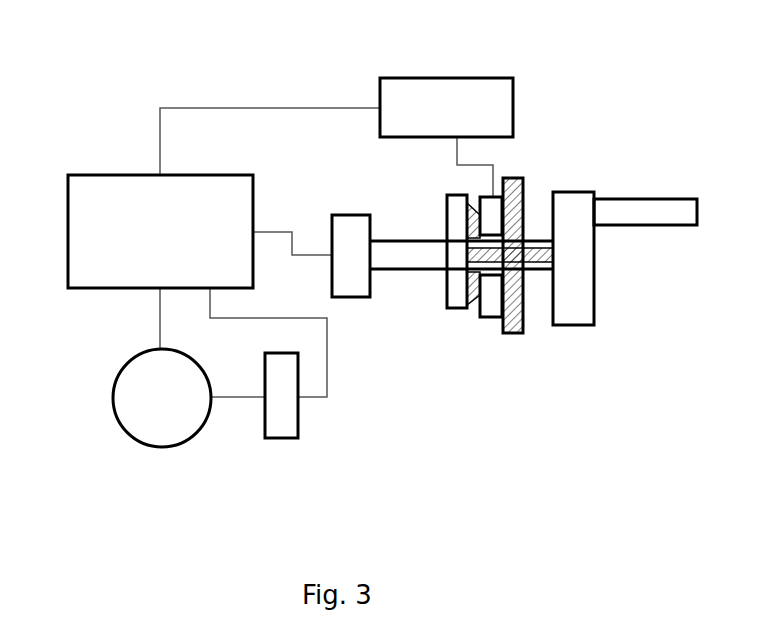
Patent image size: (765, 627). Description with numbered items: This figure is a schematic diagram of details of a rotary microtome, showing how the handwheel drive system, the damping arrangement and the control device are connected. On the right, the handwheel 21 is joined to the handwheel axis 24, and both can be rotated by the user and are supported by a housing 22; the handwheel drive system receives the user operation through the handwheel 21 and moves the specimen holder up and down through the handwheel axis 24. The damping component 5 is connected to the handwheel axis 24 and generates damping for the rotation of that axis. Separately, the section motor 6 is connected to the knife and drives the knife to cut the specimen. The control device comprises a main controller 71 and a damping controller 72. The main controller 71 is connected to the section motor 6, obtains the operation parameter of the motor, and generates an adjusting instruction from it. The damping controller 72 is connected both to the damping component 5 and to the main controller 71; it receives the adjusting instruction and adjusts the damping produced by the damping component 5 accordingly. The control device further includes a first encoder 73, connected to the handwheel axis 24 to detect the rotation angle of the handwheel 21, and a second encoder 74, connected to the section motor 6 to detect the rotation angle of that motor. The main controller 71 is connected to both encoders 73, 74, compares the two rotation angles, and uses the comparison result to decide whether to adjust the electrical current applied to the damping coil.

The main controller 71 is at (128, 207).
The damping controller 72 is at (385, 100).
The first encoder 73 is at (355, 280).
The second encoder 74 is at (270, 430).
The section motor 6 is at (130, 415).
The damping component 5 is at (493, 317).
The handwheel 21 is at (580, 208).
The housing 22 is at (528, 198).
The handwheel axis 24 is at (541, 258).